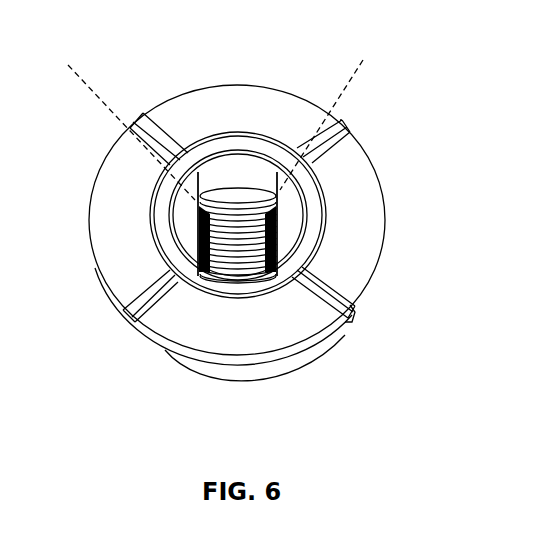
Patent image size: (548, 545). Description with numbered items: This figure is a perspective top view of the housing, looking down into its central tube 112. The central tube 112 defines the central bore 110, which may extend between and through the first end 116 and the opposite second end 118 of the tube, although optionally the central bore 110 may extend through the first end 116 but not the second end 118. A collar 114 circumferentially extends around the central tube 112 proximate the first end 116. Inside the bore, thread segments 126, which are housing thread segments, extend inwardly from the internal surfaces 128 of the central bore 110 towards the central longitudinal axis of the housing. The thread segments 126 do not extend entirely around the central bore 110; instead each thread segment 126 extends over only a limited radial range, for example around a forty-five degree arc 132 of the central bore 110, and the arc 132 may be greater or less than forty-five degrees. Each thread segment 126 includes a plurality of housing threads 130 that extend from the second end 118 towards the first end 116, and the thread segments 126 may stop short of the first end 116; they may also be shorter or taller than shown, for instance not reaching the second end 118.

The central bore 110 is at (222, 178).
The central tube 112 is at (202, 377).
The collar 114 is at (307, 122).
The first end 116 is at (197, 140).
The second end 118 is at (247, 265).
The thread segments 126 is at (241, 203).
The internal surfaces 128 is at (288, 210).
The housing threads 130 is at (223, 228).
The forty-five degree arc 132 is at (358, 63).